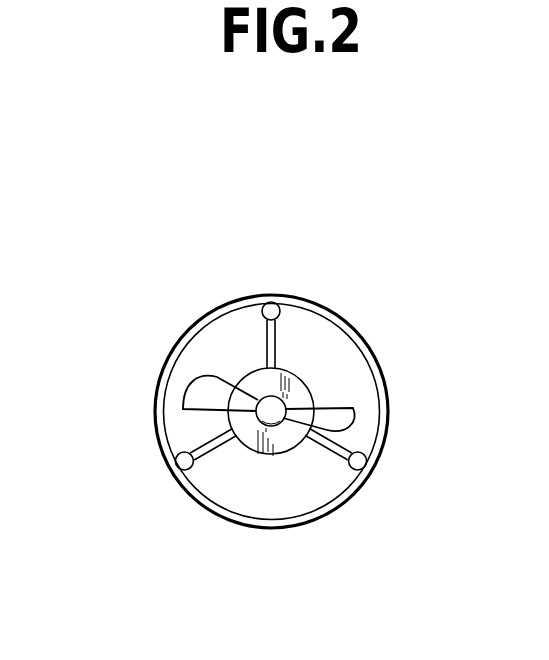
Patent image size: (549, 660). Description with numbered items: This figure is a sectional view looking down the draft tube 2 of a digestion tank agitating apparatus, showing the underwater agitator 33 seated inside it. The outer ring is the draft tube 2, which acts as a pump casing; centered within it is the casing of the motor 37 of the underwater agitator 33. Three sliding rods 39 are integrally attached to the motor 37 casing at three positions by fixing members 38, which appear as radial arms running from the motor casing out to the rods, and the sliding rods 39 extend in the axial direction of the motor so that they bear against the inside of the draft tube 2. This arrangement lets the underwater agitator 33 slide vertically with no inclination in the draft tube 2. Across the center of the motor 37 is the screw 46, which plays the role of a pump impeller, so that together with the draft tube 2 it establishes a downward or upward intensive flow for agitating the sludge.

The draft tube 2 is at (370, 348).
The underwater agitator 33 is at (307, 350).
The motor 37 is at (259, 455).
The fixing members 38 is at (268, 342).
The sliding rods 39 is at (270, 302).
The screw 46 is at (350, 406).